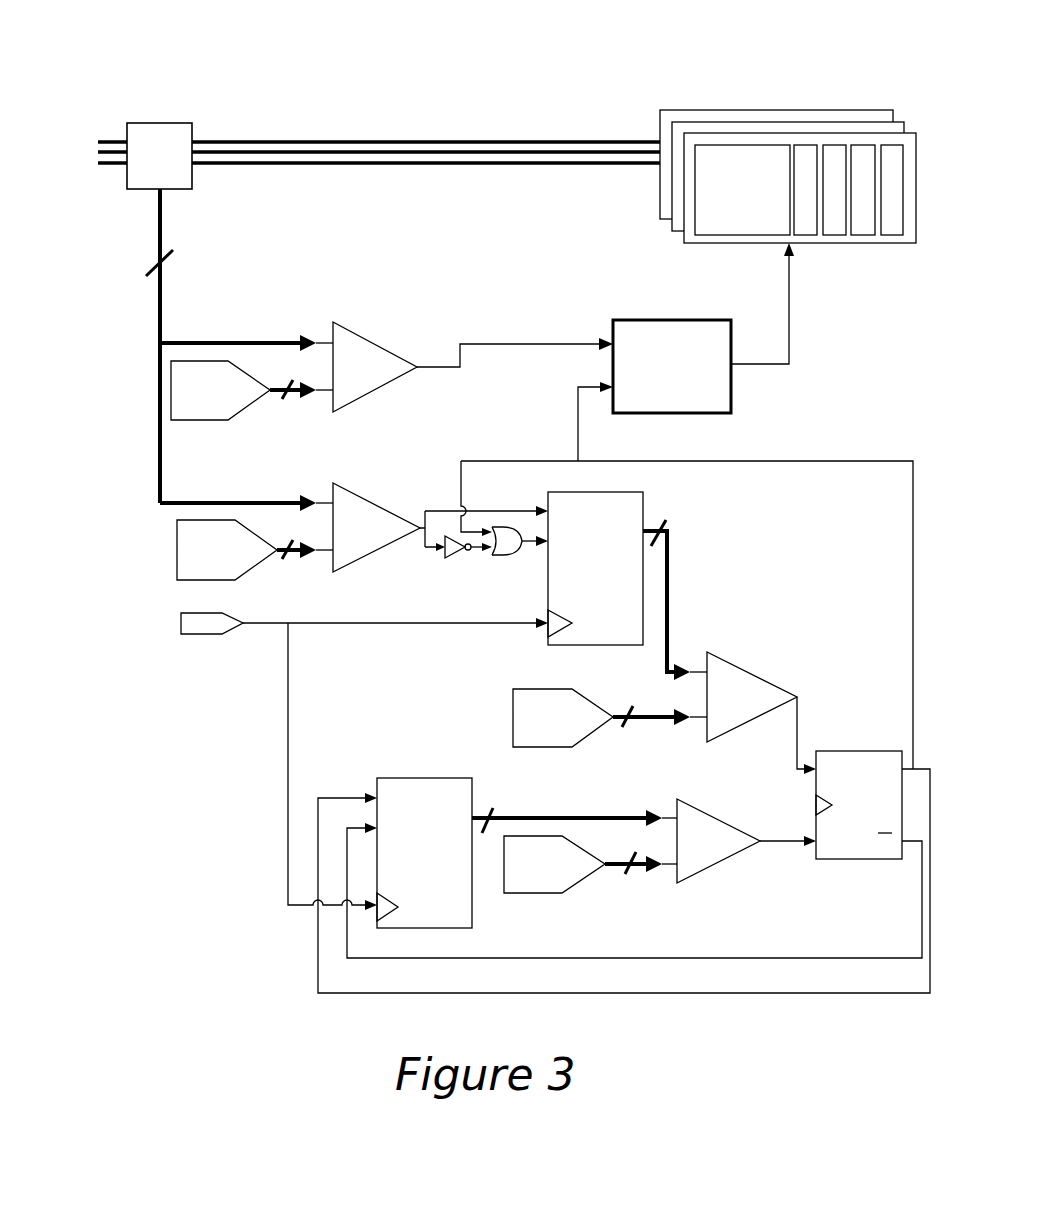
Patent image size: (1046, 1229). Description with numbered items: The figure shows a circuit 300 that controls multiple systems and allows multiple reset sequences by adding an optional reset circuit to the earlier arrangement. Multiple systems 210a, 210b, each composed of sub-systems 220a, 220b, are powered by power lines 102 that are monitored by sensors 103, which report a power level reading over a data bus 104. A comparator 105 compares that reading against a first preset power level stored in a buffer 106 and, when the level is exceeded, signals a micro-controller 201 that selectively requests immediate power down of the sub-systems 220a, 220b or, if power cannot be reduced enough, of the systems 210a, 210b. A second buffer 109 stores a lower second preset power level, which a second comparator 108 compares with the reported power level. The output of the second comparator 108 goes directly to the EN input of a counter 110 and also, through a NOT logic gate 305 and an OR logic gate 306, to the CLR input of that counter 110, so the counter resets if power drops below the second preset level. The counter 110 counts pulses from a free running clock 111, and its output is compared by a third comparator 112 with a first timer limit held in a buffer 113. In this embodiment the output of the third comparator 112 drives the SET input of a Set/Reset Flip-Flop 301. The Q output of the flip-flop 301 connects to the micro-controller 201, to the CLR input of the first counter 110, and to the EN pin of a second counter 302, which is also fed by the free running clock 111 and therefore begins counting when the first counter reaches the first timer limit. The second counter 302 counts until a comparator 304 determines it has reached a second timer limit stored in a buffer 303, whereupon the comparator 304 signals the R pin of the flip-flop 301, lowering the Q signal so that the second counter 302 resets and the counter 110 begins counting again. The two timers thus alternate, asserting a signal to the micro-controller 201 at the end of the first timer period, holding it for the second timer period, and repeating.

The circuit 300 is at (430, 84).
The power lines 102 is at (287, 128).
The sensors 103 is at (165, 114).
The data bus 104 is at (141, 240).
The comparator 105 is at (366, 323).
The buffer 106 is at (139, 395).
The second comparator 108 is at (366, 475).
The second buffer 109 is at (144, 550).
The counter 110 is at (677, 512).
The free running clock 111 is at (160, 628).
The third comparator 112 is at (744, 655).
The buffer 113 is at (498, 703).
The micro-controller 201 is at (635, 310).
The system 210a is at (697, 102).
The system 210b is at (671, 243).
The sub-system 220a is at (806, 170).
The sub-system 220b is at (836, 218).
The Set/Reset Flip-Flop 301 is at (858, 734).
The second counter 302 is at (406, 758).
The buffer 303 is at (550, 909).
The comparator 304 is at (715, 888).
The inverter 305 is at (454, 568).
The OR gate 306 is at (508, 572).